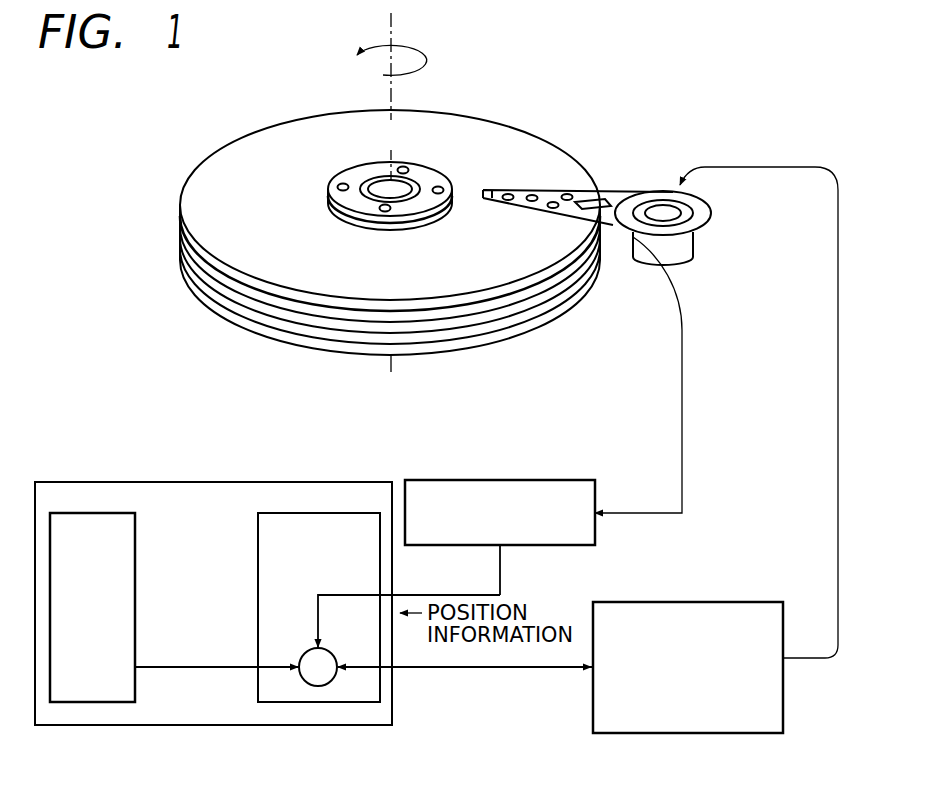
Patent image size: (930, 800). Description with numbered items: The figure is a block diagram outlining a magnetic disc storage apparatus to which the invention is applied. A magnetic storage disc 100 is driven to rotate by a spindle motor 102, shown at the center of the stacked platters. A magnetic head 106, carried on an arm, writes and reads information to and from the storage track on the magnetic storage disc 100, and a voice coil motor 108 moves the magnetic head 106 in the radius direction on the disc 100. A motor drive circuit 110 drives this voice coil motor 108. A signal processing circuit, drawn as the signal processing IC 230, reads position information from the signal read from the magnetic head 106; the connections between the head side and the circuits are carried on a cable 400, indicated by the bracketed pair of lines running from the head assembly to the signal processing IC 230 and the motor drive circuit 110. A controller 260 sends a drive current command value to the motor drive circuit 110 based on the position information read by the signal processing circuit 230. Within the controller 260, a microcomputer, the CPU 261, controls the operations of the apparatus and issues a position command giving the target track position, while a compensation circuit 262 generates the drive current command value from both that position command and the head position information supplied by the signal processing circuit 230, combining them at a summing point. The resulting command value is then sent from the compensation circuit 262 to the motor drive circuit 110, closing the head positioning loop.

The magnetic storage disc 100 is at (233, 165).
The spindle motor 102 is at (388, 182).
The magnetic head 106 is at (492, 192).
The voice coil motor 108 is at (693, 238).
The cable 400 is at (838, 375).
The controller 260 is at (277, 482).
The microcomputer (CPU) 261 is at (115, 702).
The compensation circuit 262 is at (345, 702).
The signal processing circuit (signal processing IC) 230 is at (550, 480).
The motor drive circuit 110 is at (752, 602).